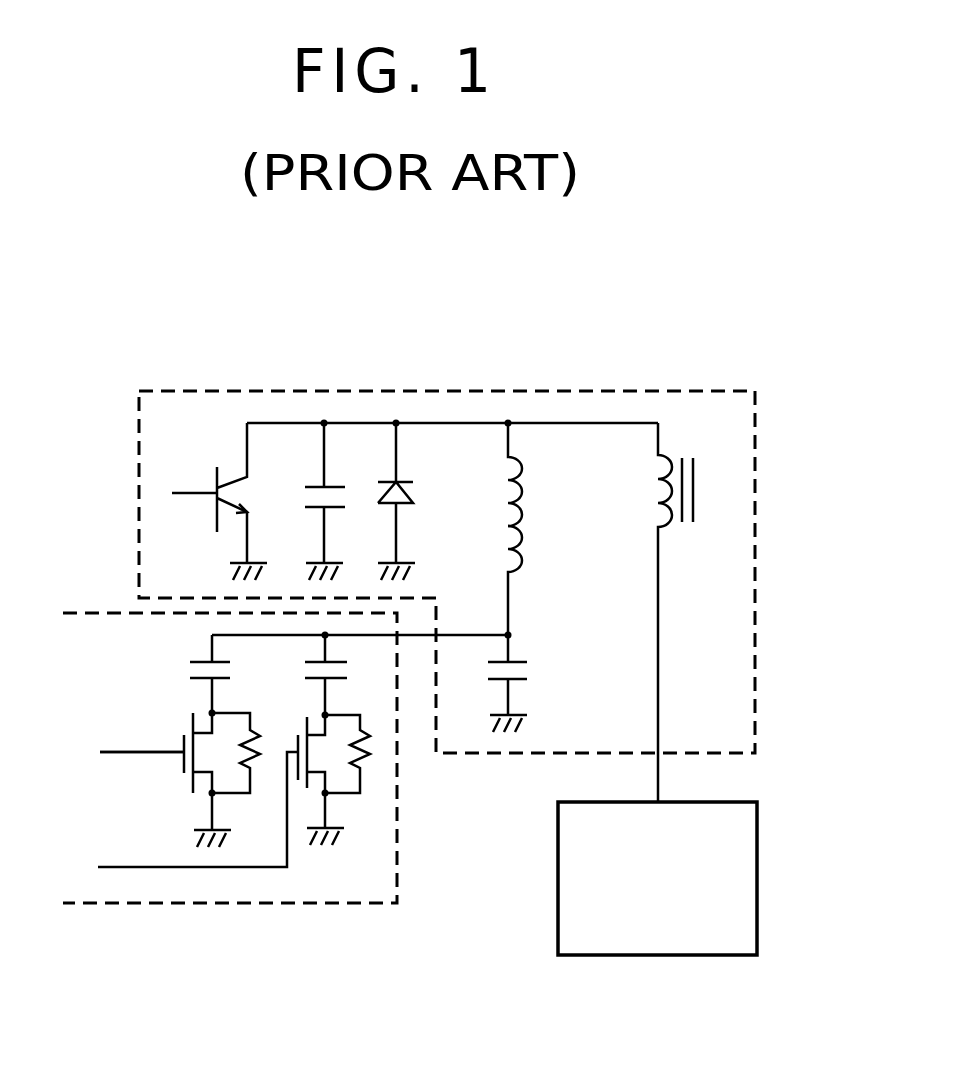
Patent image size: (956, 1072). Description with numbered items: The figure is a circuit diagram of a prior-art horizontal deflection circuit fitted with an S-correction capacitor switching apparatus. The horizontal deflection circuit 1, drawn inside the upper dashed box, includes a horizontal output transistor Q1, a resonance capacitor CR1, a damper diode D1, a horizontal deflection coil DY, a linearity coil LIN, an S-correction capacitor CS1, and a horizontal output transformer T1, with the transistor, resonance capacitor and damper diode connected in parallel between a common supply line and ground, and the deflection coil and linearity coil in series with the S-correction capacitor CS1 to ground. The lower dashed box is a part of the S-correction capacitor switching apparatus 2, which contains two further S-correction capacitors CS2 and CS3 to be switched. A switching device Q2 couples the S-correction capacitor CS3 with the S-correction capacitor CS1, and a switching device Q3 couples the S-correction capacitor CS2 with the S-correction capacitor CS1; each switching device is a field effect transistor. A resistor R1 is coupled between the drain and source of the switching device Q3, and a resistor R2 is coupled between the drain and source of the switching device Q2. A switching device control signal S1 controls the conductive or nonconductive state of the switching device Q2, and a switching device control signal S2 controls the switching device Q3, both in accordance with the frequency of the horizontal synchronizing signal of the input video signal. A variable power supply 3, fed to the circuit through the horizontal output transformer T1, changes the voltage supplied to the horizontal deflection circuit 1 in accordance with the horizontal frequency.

The horizontal deflection circuit 1 is at (755, 637).
The S-correction capacitor switching apparatus 2 is at (397, 895).
The variable power supply 3 is at (757, 872).
The resonance capacitor CR1 is at (348, 493).
The horizontal output transistor Q1 is at (234, 501).
The damper diode D1 is at (419, 500).
The horizontal deflection coil DY is at (539, 473).
The linearity coil LIN is at (545, 580).
The horizontal output transformer T1 is at (692, 610).
The S-correction capacitor CS1 is at (402, 682).
The S-correction capacitor CS2 is at (290, 674).
The S-correction capacitor CS3 is at (190, 668).
The switching device Q2 is at (165, 779).
The switching device Q3 is at (297, 778).
The resistor R1 is at (370, 752).
The resistor R2 is at (264, 753).
The switching device control signal S1 is at (131, 733).
The switching device control signal S2 is at (188, 809).